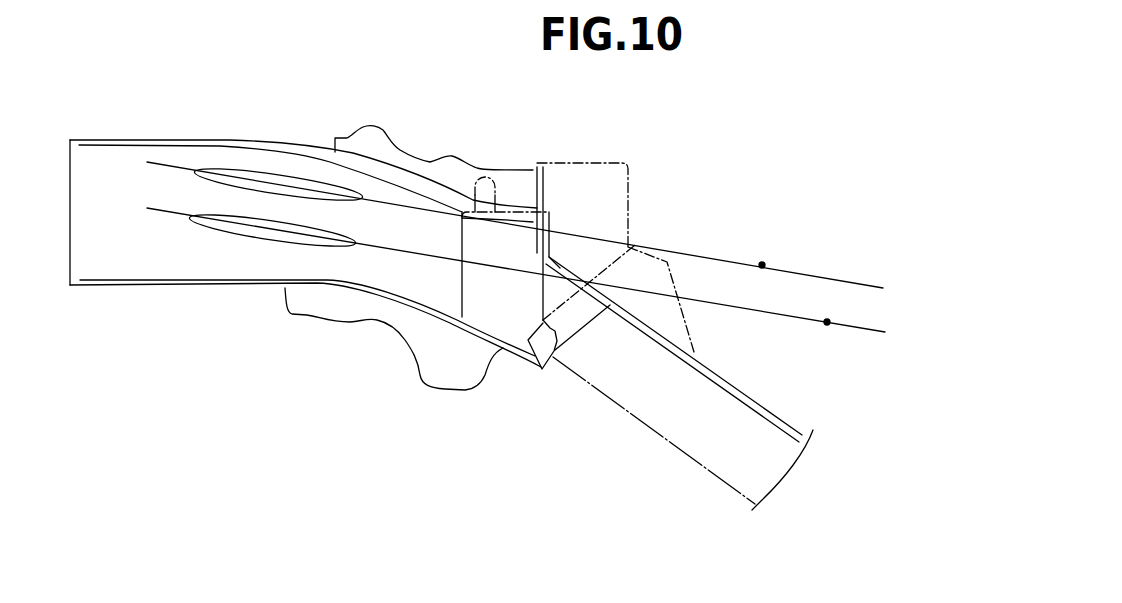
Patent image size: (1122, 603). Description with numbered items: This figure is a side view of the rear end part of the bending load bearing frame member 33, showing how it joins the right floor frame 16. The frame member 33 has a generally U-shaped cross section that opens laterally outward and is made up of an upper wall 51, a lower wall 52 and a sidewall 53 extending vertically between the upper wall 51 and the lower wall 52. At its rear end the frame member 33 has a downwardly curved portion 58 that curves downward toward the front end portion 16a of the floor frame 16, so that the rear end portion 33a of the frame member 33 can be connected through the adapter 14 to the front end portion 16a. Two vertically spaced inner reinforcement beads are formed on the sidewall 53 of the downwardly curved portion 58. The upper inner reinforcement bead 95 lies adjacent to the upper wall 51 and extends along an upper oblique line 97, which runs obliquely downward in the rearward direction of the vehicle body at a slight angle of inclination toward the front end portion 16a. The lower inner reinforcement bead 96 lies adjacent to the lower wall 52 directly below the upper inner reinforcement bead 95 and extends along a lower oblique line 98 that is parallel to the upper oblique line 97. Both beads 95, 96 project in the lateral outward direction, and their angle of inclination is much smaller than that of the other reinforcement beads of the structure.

The adapter 14 is at (628, 172).
The floor frame 16 is at (720, 460).
The front end portion of the floor frame 16a is at (590, 370).
The bending load bearing frame member 33 is at (400, 150).
The rear end portion of the bending load bearing frame member 33a is at (523, 250).
The upper wall 51 is at (130, 140).
The lower wall 52 is at (170, 285).
The sidewall 53 is at (103, 246).
The downwardly curved portion 58 is at (267, 266).
The upper inner reinforcement bead 95 is at (227, 168).
The lower inner reinforcement bead 96 is at (290, 222).
The upper oblique line 97 is at (762, 265).
The lower oblique line 98 is at (827, 322).